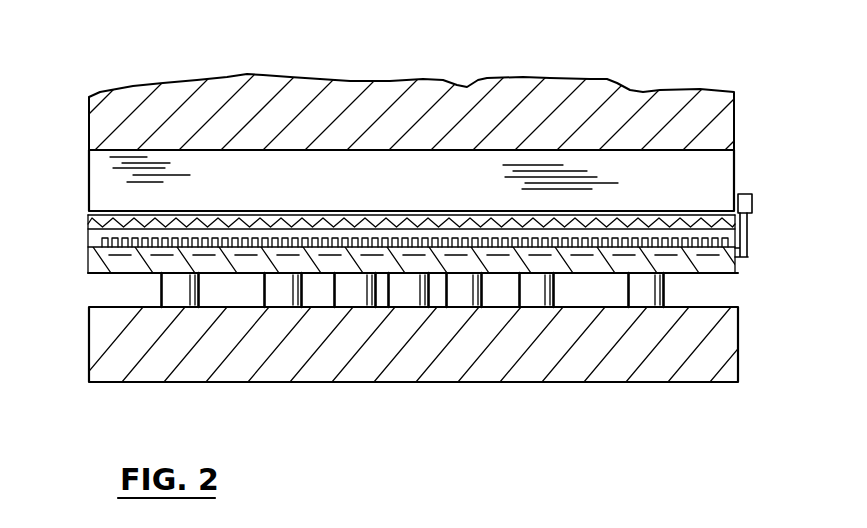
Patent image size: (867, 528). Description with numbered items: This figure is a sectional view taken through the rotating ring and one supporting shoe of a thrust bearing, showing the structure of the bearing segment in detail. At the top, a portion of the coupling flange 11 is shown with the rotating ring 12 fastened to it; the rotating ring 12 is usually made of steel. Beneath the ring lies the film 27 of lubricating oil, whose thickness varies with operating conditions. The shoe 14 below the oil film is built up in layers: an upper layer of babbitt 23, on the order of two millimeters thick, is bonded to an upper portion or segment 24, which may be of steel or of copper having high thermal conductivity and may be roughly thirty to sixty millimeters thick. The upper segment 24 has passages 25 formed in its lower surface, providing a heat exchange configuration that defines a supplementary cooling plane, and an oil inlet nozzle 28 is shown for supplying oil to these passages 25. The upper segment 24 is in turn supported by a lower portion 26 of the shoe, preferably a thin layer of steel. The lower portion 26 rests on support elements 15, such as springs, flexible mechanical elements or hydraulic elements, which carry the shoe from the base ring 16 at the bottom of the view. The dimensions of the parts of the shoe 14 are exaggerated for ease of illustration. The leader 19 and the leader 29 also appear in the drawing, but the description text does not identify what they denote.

The upper substrate (hatched glass plate) 11 is at (727, 113).
The transparent layer / glass 12 is at (720, 168).
The hatched electrode/support layer 14 is at (733, 265).
The spacer bumps 15 is at (637, 297).
The lower substrate 16 is at (740, 363).
The light path / interface indicator 19 is at (220, 212).
The lead wires 23 is at (747, 228).
The zigzag layer / electrode layer 24 is at (748, 247).
The electrode elements (row of squares) 25 is at (197, 241).
The gap between spacers 26 is at (733, 275).
The surface of transparent layer 27 is at (122, 209).
The terminal 28 is at (752, 200).
The interface line 29 is at (285, 213).